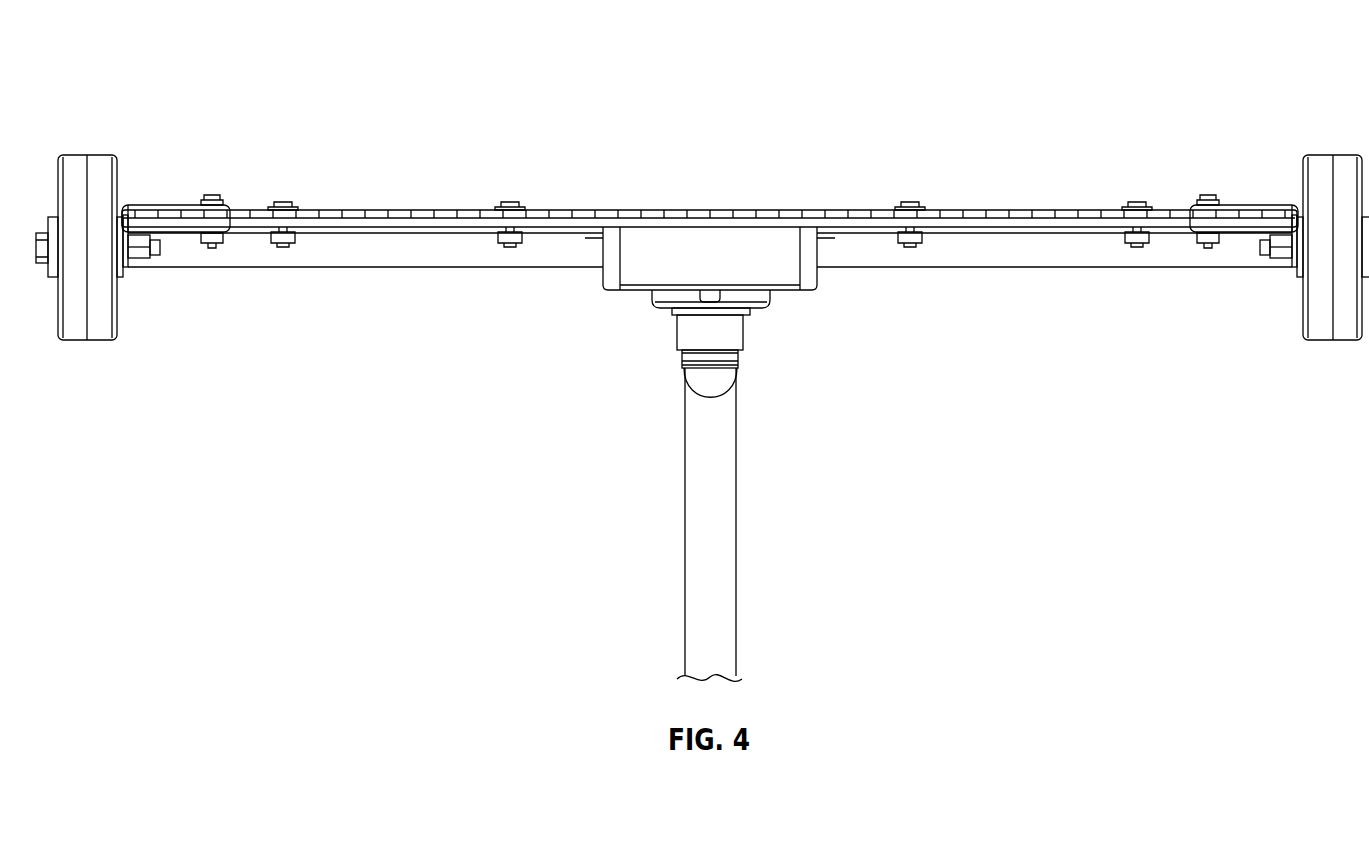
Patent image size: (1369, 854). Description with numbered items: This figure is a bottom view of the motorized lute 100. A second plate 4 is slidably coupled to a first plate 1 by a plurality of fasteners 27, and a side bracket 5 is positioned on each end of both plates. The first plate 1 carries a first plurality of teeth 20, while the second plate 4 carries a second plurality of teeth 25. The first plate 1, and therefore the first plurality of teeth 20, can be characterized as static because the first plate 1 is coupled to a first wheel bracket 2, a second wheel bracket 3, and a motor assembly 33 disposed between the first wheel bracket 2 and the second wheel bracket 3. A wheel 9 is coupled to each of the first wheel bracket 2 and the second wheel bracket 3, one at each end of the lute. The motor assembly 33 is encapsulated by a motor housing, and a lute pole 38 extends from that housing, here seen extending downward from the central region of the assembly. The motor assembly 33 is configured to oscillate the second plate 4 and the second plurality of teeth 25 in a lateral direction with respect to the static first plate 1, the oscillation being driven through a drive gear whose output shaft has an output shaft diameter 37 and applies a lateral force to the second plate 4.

The motorized lute 100 is at (92, 73).
The wheel 9 is at (80, 153).
The side bracket 5 is at (182, 203).
The second plate 4 is at (580, 209).
The first plate 1 is at (327, 229).
The first plurality of teeth 20 is at (433, 229).
The fasteners 27 is at (283, 200).
The first wheel bracket 2 is at (187, 255).
The second wheel bracket 3 is at (1068, 268).
The second plurality of teeth 25 is at (647, 209).
The motor assembly 33 is at (620, 292).
The output shaft diameter 37 is at (800, 292).
The lute pole 38 is at (737, 507).